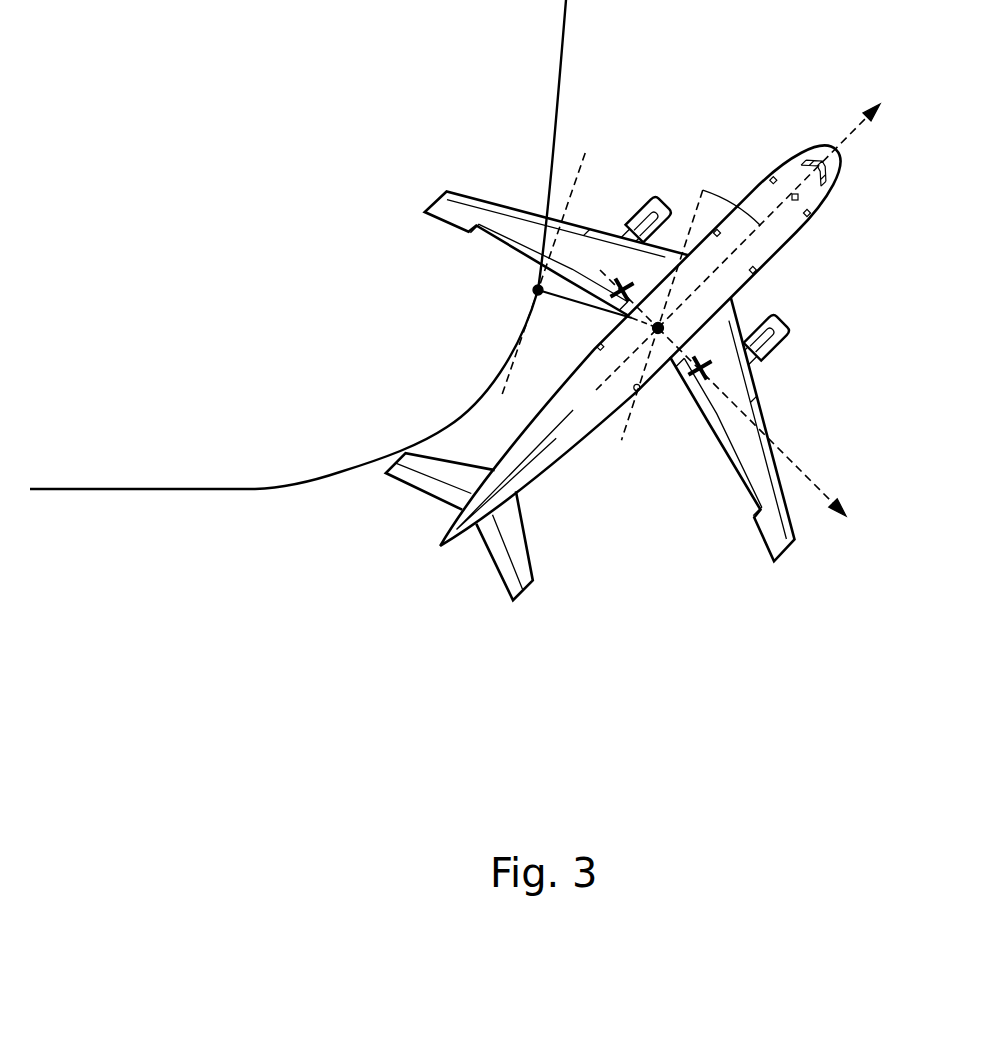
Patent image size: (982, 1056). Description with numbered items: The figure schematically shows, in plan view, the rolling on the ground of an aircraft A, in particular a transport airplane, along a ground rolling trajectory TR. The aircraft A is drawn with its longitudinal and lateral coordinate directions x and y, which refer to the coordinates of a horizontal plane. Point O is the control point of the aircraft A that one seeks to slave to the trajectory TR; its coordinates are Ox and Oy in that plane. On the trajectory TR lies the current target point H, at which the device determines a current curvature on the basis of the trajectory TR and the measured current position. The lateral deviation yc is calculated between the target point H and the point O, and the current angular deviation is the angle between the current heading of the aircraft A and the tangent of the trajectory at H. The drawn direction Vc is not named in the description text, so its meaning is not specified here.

The ground rolling trajectory TR is at (563, 24).
The current target point H is at (533, 290).
The aircraft A is at (787, 236).
The control point of the aircraft O is at (660, 333).
The x coordinate axis x is at (750, 216).
The y coordinate axis y is at (721, 439).
The velocity direction Vc is at (642, 315).